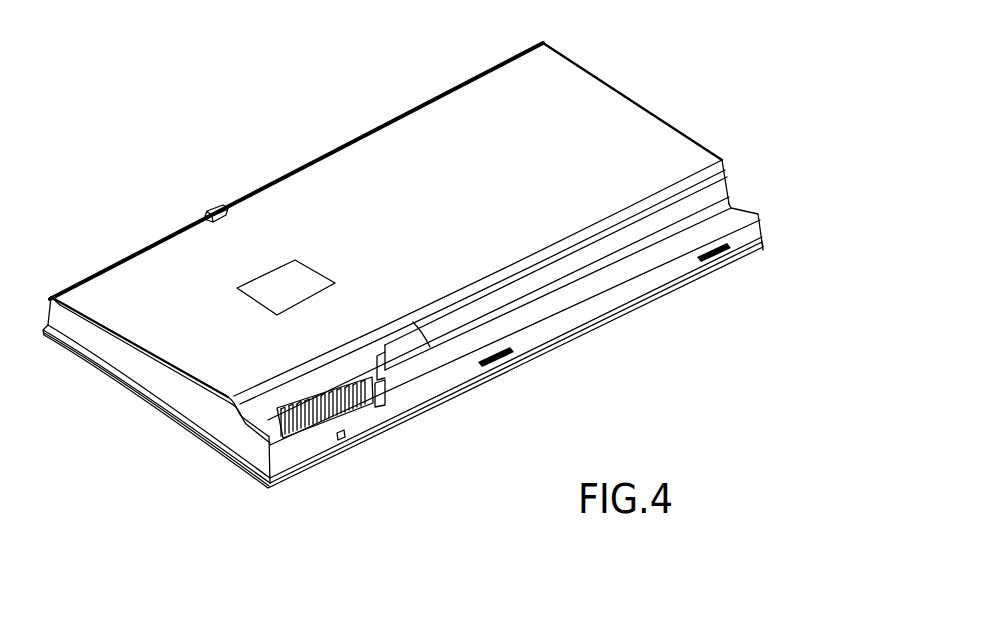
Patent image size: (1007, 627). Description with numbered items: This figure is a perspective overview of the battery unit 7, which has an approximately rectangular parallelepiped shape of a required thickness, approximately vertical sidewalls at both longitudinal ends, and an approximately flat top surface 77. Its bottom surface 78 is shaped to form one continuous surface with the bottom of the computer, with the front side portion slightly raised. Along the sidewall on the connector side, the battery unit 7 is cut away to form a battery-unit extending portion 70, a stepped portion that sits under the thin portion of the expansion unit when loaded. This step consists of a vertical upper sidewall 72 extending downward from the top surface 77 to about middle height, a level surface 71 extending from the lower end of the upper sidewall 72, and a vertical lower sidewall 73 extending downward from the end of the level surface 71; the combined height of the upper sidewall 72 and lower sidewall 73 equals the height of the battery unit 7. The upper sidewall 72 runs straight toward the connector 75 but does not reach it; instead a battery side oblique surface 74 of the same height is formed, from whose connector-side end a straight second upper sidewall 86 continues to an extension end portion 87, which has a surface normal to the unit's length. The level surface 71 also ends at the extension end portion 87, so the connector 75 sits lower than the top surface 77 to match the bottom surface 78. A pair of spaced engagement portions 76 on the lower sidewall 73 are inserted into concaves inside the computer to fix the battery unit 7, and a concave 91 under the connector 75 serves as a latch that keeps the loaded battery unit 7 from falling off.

The battery unit 7 is at (586, 96).
The battery-unit extending portion 70 is at (563, 297).
The level surface 71 is at (736, 213).
The upper sidewall 72 is at (722, 187).
The lower sidewall 73 is at (752, 233).
The battery side oblique surface 74 is at (445, 350).
The connector 75 is at (322, 427).
The engagement portions 76 is at (495, 363).
The top surface 77 is at (308, 192).
The bottom surface 78 is at (173, 410).
The second upper sidewall 86 is at (413, 324).
The extension end portion 87 is at (387, 368).
The concave 91 is at (341, 440).